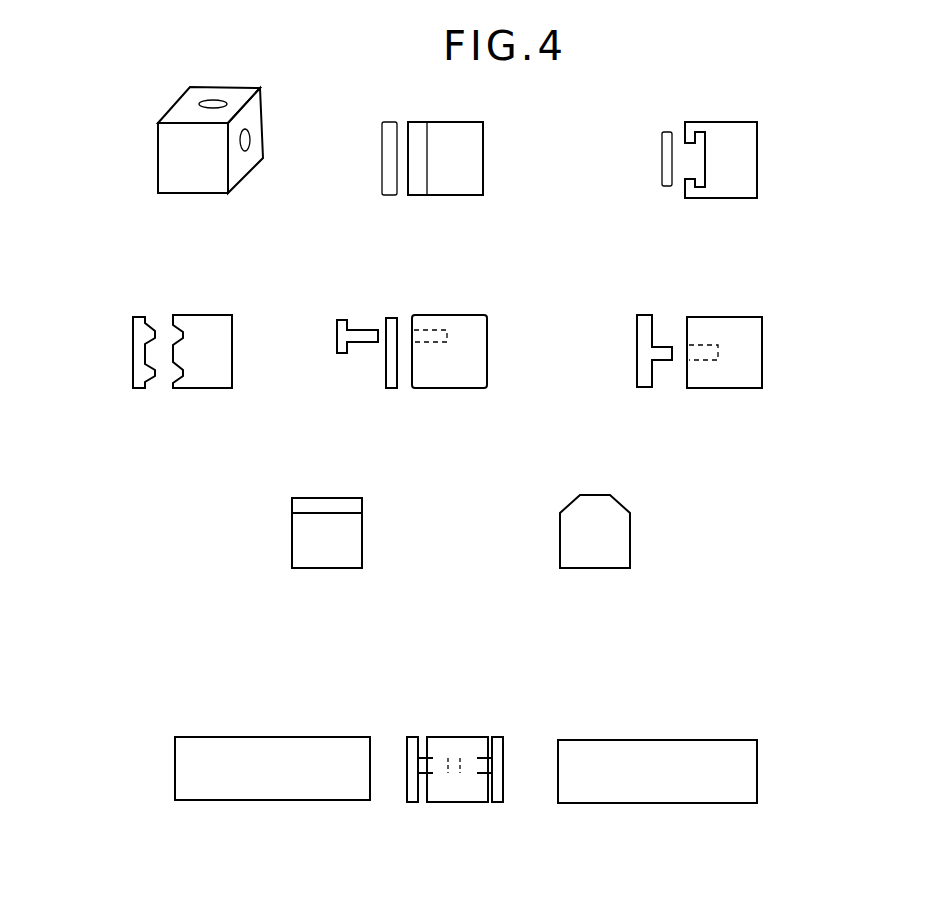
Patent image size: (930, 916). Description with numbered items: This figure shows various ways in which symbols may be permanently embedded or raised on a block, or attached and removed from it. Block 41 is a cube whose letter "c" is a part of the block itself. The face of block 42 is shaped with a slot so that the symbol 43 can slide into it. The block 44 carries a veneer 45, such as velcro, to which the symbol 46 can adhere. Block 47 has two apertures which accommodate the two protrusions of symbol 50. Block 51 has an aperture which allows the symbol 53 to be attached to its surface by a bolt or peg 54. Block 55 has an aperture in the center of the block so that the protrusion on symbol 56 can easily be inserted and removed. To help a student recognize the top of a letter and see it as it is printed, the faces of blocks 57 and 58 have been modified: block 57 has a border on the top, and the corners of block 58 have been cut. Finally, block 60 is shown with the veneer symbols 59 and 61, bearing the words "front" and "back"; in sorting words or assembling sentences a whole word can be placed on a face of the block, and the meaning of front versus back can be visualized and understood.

The block 41 is at (158, 150).
The block 42 is at (747, 92).
The symbol 43 is at (657, 170).
The block 44 is at (467, 120).
The veneer 45 is at (423, 118).
The symbol 46 is at (382, 150).
The block 47 is at (190, 312).
The symbol 50 is at (132, 378).
The block 51 is at (492, 372).
The symbol 53 is at (388, 388).
The bolt or peg 54 is at (360, 330).
The block 55 is at (767, 337).
The symbol 56 is at (635, 340).
The block 57 is at (370, 558).
The block 58 is at (557, 555).
The veneer symbol 59 is at (415, 735).
The block 60 is at (442, 803).
The veneer symbol 61 is at (578, 737).